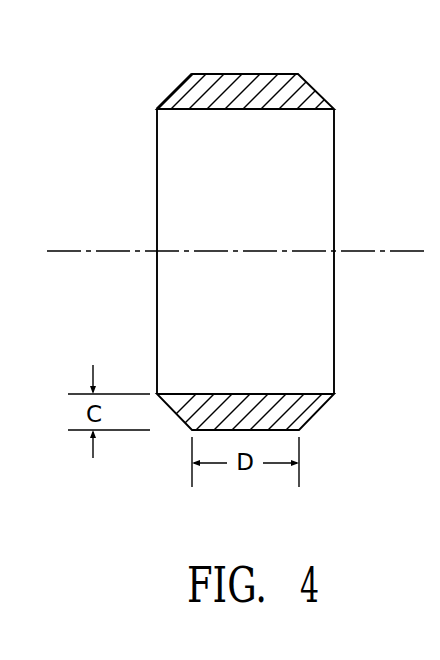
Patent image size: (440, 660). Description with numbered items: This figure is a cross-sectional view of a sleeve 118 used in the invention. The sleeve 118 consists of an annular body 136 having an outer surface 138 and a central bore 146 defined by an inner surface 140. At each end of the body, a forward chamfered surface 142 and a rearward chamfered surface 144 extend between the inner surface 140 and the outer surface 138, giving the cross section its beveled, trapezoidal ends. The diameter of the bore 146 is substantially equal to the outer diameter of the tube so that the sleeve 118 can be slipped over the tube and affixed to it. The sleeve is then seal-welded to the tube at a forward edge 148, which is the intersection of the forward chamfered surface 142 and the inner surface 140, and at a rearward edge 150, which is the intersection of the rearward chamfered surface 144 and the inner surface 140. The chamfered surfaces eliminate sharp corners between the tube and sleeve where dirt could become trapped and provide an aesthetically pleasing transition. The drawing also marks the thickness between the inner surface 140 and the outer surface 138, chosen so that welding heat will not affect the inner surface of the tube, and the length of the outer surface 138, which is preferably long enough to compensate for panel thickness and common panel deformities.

The sleeve 118 is at (312, 58).
The annular body 136 is at (207, 92).
The outer surface 138 is at (241, 74).
The inner surface 140 is at (188, 110).
The forward chamfered surface 142 is at (176, 90).
The rearward chamfered surface 144 is at (318, 90).
The bore 146 is at (190, 223).
The forward edge 148 is at (157, 108).
The rearward edge 150 is at (335, 109).